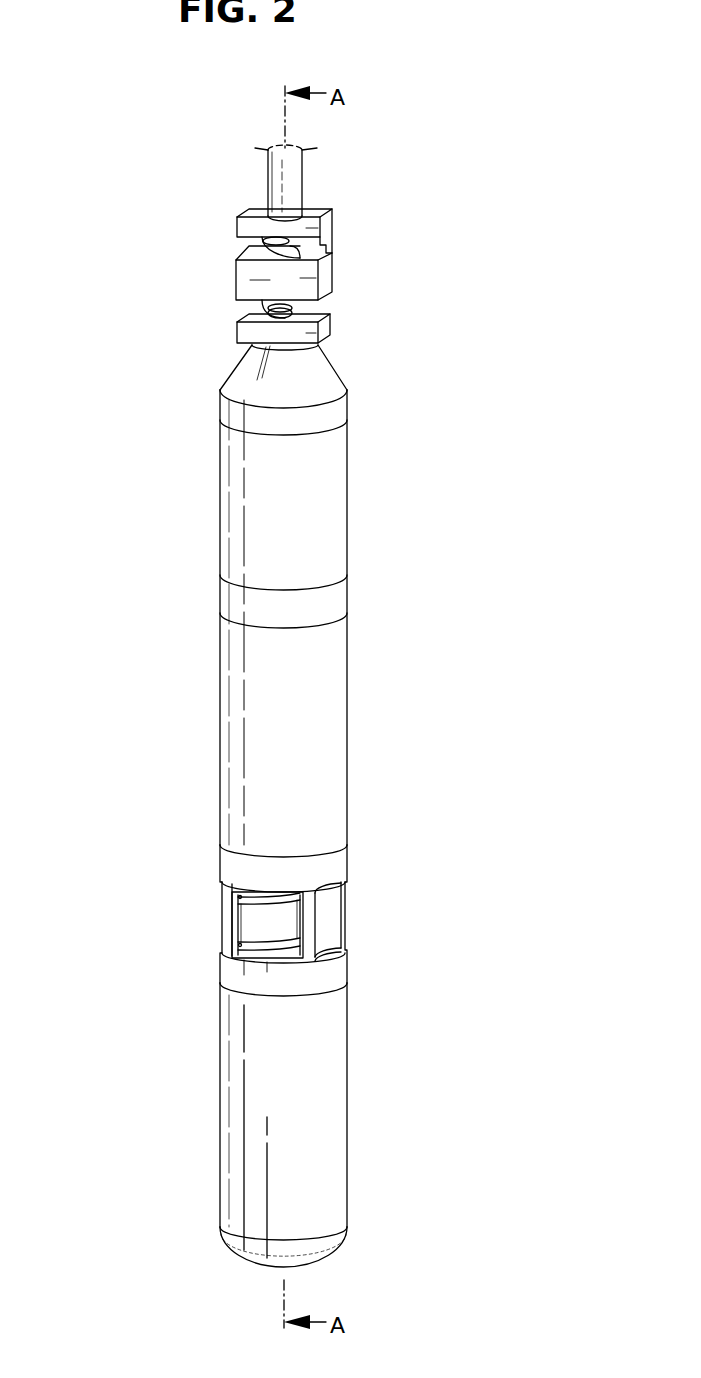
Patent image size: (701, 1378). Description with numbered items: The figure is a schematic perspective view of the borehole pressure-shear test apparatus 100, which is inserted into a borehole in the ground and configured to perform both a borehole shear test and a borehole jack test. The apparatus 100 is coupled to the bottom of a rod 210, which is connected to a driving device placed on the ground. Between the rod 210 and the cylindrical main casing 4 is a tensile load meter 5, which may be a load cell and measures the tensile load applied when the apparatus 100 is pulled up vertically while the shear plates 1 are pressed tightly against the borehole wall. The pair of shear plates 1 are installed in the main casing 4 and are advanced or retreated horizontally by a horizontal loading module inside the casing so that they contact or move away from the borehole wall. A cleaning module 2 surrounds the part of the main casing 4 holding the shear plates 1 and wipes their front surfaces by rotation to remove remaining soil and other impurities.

The borehole pressure-shear test apparatus 100 is at (182, 388).
The rod 210 is at (275, 178).
The tensile load meter 5 is at (282, 281).
The main casing 4 is at (228, 723).
The cleaning module 2 is at (214, 870).
The shear plates 1 is at (245, 925).